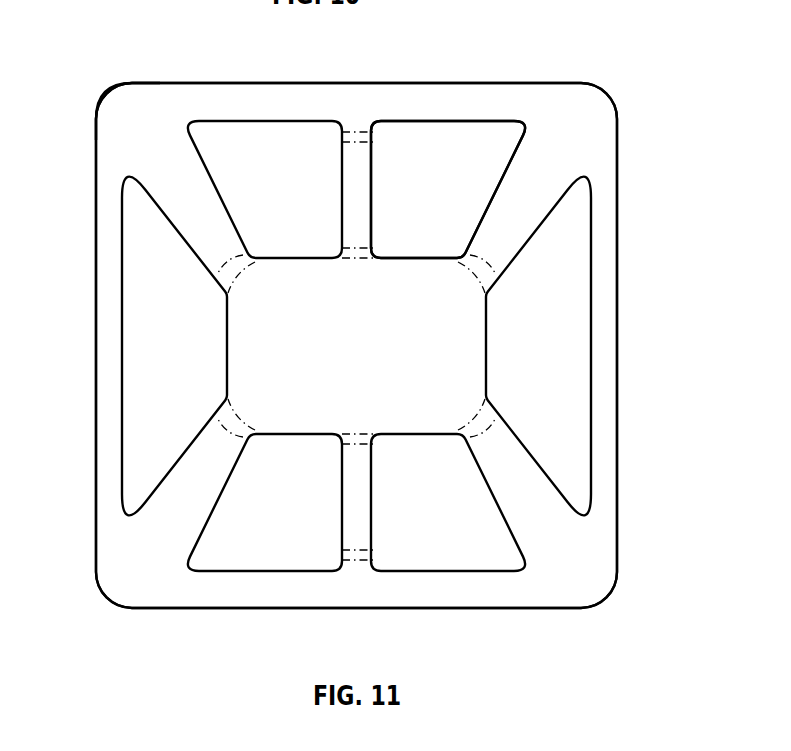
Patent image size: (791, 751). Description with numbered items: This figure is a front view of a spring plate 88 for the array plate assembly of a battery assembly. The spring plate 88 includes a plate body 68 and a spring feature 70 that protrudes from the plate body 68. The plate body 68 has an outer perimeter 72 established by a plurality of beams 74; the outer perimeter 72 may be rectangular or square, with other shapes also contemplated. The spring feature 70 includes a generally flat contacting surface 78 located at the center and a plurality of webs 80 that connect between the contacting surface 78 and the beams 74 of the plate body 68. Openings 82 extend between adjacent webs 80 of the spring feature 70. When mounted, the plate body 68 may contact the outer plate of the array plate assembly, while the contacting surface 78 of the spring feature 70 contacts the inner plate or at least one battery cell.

The plate body 68 is at (350, 329).
The spring feature 70 is at (480, 190).
The outer perimeter 72 is at (302, 83).
The beams 74 is at (253, 100).
The contacting surface 78 is at (370, 359).
The webs 80 is at (347, 158).
The openings 82 is at (218, 148).
The spring plate 88 is at (141, 66).